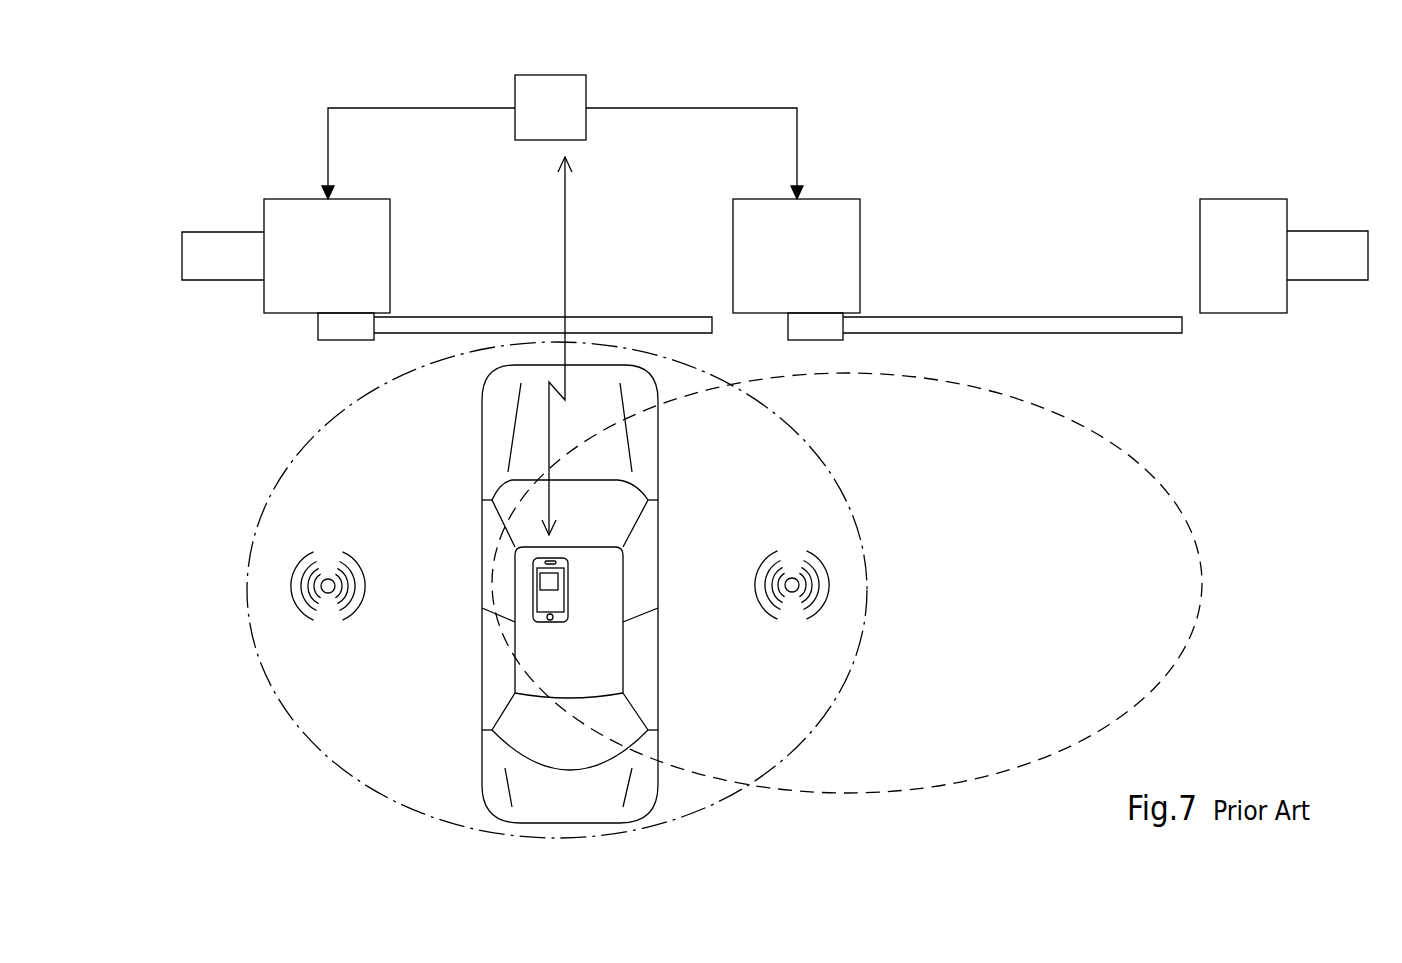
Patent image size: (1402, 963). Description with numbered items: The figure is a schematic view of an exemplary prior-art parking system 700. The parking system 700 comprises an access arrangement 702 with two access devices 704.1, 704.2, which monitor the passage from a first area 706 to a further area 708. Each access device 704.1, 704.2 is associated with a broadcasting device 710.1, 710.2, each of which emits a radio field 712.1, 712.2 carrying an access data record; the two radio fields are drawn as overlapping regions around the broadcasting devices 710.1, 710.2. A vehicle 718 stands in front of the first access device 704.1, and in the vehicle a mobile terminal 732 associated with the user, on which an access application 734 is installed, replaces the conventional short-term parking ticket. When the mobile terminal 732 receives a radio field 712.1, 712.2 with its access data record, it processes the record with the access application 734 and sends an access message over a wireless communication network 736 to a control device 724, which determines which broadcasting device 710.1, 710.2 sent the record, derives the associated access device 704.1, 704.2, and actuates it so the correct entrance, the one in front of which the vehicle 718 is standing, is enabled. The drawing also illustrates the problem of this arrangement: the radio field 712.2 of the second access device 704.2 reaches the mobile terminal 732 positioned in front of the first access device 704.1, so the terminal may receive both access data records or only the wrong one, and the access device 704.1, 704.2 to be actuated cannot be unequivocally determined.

The parking system 700 is at (1306, 112).
The access arrangement 702 is at (1200, 176).
The first access device 704.1 is at (487, 245).
The second access device 704.2 is at (1068, 244).
The first area 706 is at (262, 757).
The further area 708 is at (263, 110).
The first broadcasting device 710.1 is at (375, 572).
The second broadcasting device 710.2 is at (745, 572).
The first radio field 712.1 is at (270, 497).
The second radio field 712.2 is at (1188, 642).
The vehicle 718 is at (587, 811).
The control device 724 is at (570, 121).
The mobile terminal 732 is at (550, 625).
The application 734 is at (558, 580).
The wireless communication network 736 is at (566, 256).